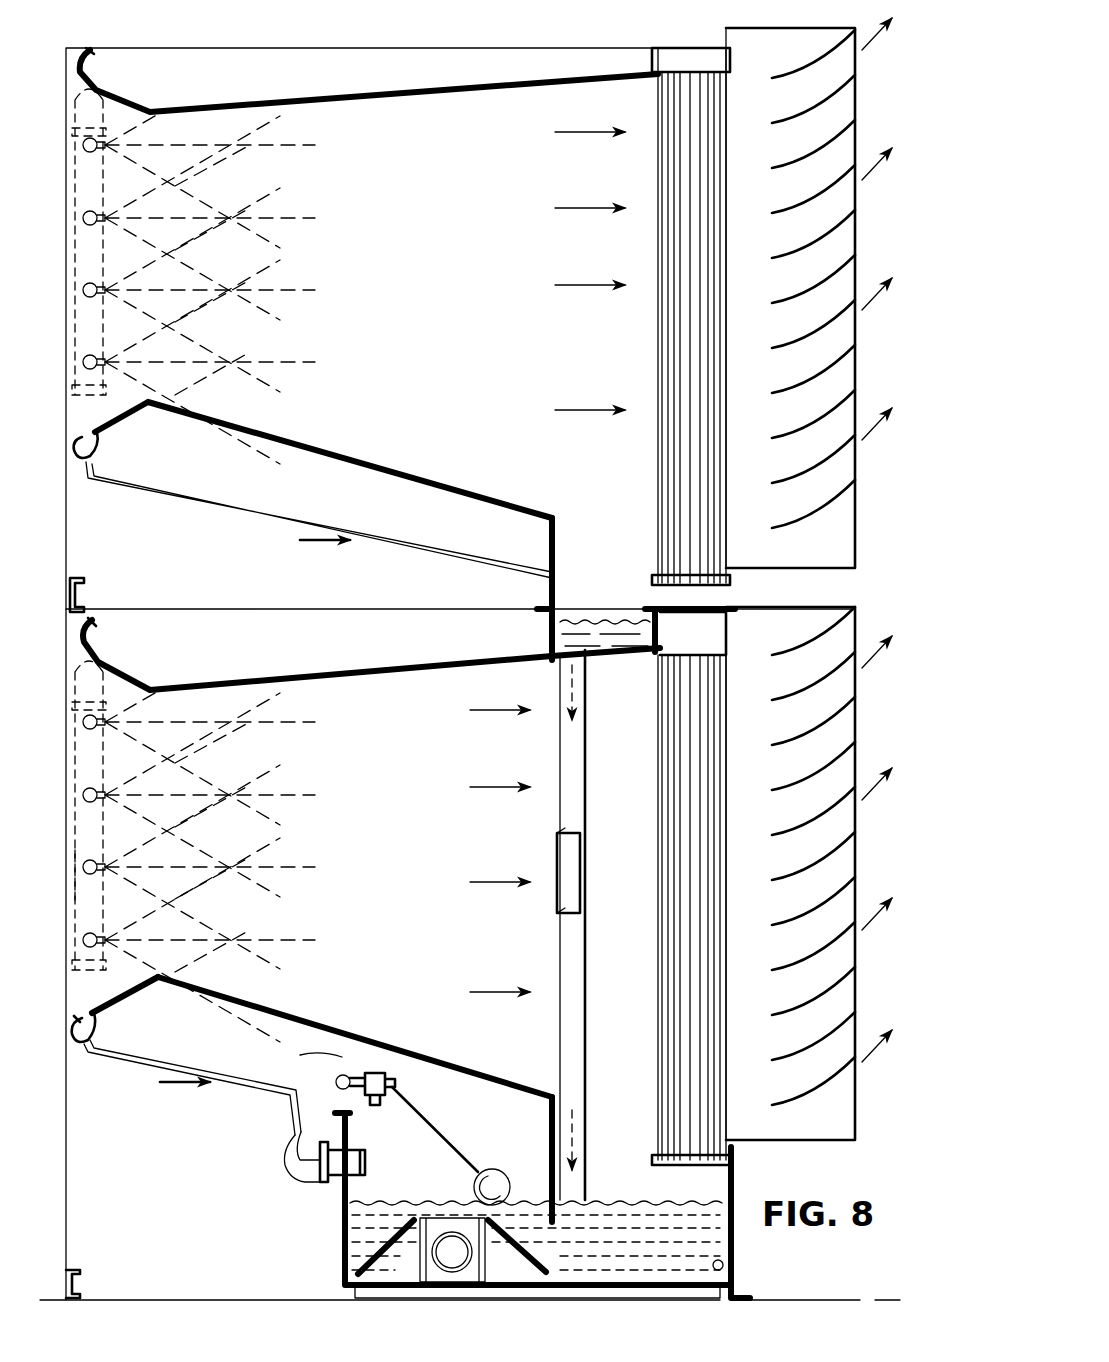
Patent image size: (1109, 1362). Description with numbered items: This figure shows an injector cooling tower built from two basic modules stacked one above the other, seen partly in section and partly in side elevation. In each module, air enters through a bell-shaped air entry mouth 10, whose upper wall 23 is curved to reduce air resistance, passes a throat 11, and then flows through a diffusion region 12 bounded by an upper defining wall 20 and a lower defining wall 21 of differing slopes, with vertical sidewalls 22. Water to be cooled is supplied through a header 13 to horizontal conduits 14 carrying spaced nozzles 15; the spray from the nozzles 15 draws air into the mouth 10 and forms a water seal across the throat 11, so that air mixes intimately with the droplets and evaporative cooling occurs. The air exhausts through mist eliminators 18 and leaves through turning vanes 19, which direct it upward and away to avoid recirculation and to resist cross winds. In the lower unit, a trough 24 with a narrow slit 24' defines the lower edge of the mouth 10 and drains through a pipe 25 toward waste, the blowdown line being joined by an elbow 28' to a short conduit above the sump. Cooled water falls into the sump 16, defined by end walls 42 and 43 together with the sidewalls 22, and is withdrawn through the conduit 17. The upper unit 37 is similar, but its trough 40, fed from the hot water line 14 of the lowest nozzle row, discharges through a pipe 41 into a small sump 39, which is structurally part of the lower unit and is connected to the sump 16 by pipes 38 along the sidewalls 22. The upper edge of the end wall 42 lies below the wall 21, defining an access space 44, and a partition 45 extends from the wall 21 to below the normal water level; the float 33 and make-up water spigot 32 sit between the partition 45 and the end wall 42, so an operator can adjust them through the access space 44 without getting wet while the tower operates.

The air entry mouth 10 is at (68, 760).
The throat 11 is at (160, 976).
The diffusion region 12 is at (410, 275).
The header 13 is at (86, 178).
The horizontal conduits 14 is at (88, 283).
The nozzles 15 is at (98, 862).
The sump 16 is at (434, 1191).
The conduit 17 is at (452, 1266).
The mist eliminators 18 is at (672, 348).
The turning vanes 19 is at (835, 395).
The upper defining wall 20 is at (292, 682).
The lower defining wall 21 is at (212, 996).
The sidewalls 22 is at (390, 712).
The upper wall 23 is at (84, 640).
The trough 24 is at (60, 1049).
The narrow slit 24' is at (53, 996).
The pipe 25 is at (122, 1068).
The elbow 28' is at (290, 1157).
The make-up water spigot 32 is at (378, 1100).
The float 33 is at (496, 1172).
The upper unit 37 is at (292, 78).
The pipes 38 is at (565, 848).
The small sump 39 is at (580, 636).
The trough 40 is at (78, 458).
The pipe 41 is at (240, 516).
The end wall 42 is at (346, 1232).
The end wall 43 is at (734, 1240).
The access space 44 is at (300, 1050).
The partition 45 is at (548, 1122).